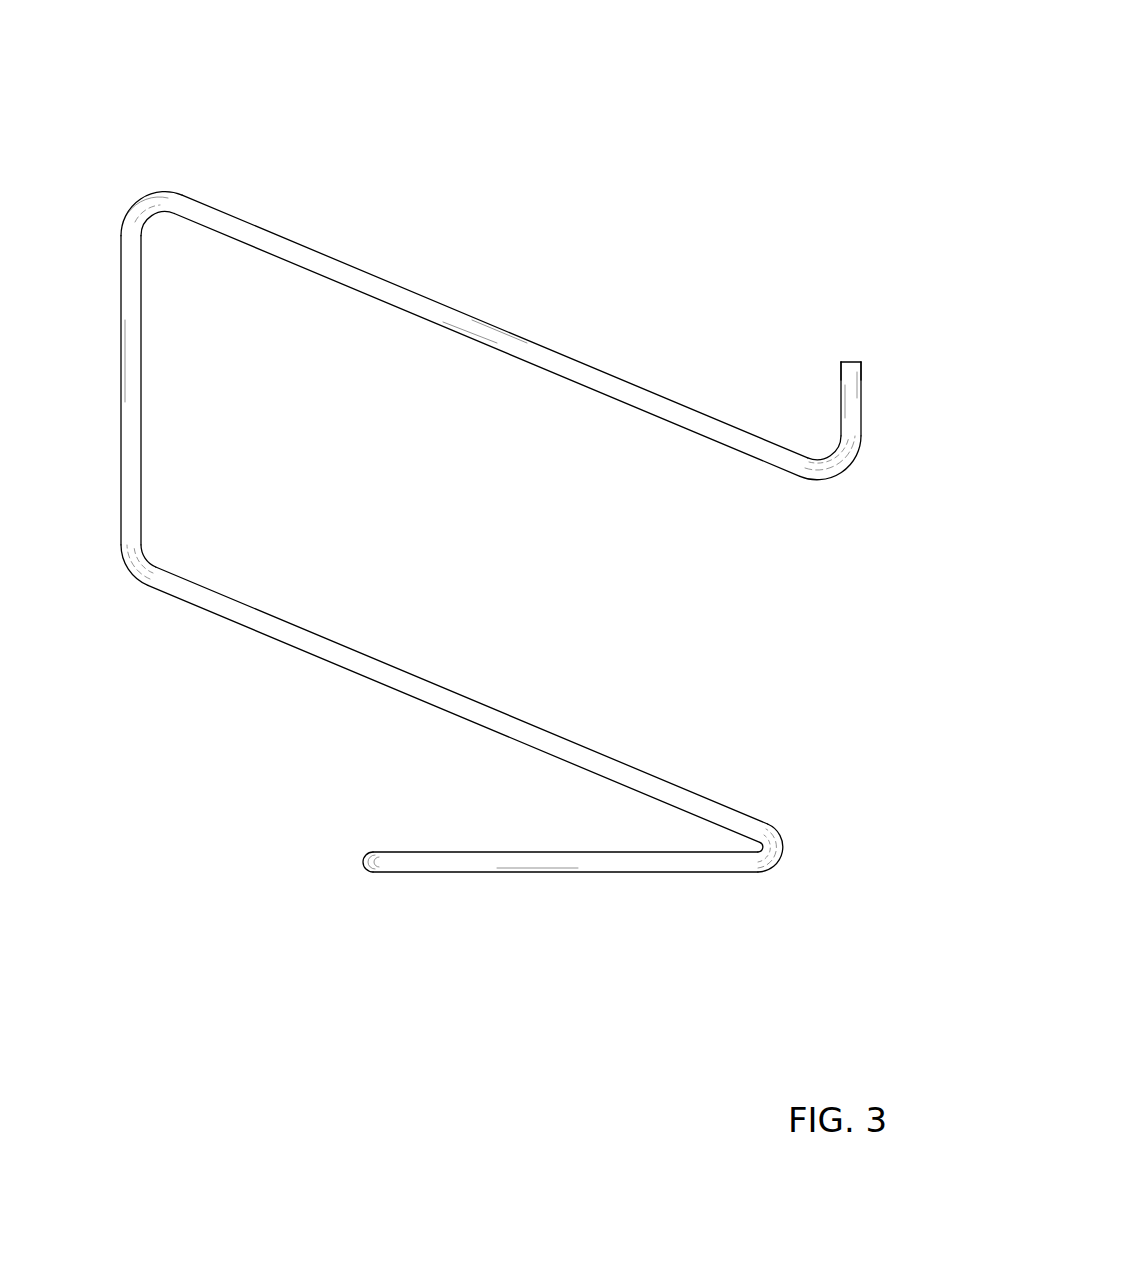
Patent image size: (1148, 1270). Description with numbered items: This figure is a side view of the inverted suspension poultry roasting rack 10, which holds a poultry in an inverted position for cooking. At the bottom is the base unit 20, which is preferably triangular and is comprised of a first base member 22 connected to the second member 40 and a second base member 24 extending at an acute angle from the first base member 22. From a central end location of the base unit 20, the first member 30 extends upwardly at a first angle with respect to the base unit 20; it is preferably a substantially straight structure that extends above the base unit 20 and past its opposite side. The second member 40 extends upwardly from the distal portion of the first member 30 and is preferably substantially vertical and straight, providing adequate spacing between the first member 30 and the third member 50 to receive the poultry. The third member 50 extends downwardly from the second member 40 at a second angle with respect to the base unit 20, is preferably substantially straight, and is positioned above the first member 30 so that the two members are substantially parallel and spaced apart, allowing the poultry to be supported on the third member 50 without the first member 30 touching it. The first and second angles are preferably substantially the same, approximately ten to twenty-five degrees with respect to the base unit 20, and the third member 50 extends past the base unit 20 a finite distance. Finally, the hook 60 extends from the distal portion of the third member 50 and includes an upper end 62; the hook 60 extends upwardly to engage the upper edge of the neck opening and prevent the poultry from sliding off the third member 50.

The inverted suspension poultry roasting rack 10 is at (663, 107).
The base unit 20 is at (545, 887).
The first base member 22 is at (648, 873).
The second base member 24 is at (363, 860).
The first member 30 is at (412, 672).
The second member 40 is at (141, 388).
The third member 50 is at (440, 302).
The hook 60 is at (840, 392).
The upper end 62 is at (848, 360).